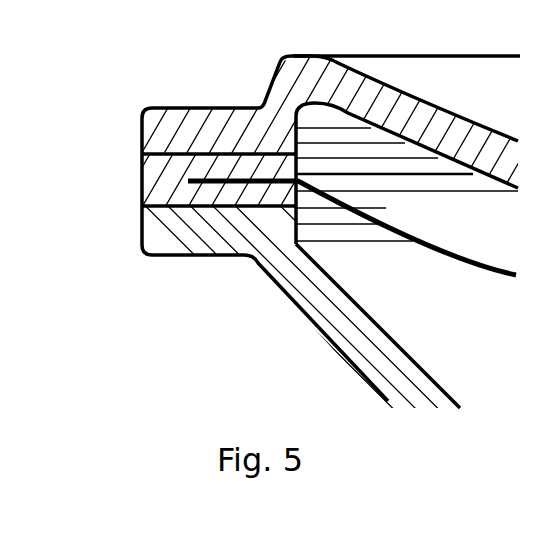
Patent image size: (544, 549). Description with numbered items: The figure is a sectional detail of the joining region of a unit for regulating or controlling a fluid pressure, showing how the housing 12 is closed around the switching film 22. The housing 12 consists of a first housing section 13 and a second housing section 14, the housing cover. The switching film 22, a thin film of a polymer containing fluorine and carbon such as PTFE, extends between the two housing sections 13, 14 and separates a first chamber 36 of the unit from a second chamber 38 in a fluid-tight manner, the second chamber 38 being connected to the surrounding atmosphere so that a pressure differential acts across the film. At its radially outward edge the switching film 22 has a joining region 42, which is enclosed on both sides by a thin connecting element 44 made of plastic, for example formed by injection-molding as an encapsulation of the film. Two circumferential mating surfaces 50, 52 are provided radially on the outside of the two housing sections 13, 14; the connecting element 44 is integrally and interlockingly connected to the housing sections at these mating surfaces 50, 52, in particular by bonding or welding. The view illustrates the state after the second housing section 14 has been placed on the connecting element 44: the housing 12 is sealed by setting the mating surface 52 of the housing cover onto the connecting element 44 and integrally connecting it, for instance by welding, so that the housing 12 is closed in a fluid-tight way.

The housing 12 is at (272, 220).
The first housing section 13 is at (302, 305).
The second housing section 14 is at (257, 92).
The switching film 22 is at (432, 244).
The first chamber 36 is at (351, 277).
The second chamber 38 is at (394, 207).
The joining region 42 is at (212, 146).
The connecting element 44 is at (144, 166).
The mating surface 50 is at (203, 204).
The mating surface 52 is at (201, 156).